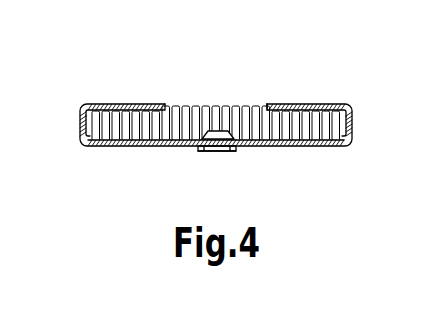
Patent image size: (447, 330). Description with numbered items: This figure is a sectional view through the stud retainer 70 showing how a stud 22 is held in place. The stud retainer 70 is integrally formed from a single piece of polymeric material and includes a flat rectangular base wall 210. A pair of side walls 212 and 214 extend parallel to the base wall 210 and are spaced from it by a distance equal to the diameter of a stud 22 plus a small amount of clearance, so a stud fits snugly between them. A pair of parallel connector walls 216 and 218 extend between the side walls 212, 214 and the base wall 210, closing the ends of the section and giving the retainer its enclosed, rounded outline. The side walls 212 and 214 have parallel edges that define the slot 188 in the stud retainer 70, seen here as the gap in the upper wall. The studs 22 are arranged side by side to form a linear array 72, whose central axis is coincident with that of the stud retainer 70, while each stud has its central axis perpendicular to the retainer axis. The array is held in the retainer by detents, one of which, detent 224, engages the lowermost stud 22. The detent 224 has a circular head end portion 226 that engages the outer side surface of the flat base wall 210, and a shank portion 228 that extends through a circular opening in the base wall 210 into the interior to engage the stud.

The stud retainer 70 is at (78, 100).
The side wall 212 is at (131, 103).
The linear array of studs 72 is at (184, 100).
The shank portion 228 is at (218, 132).
The slot 188 is at (266, 104).
The stud 22 is at (336, 84).
The side wall 214 is at (325, 105).
The connector wall 216 is at (80, 128).
The connector wall 218 is at (355, 130).
The base wall 210 is at (291, 147).
The detent 224 is at (203, 160).
The circular head end portion 226 is at (220, 151).